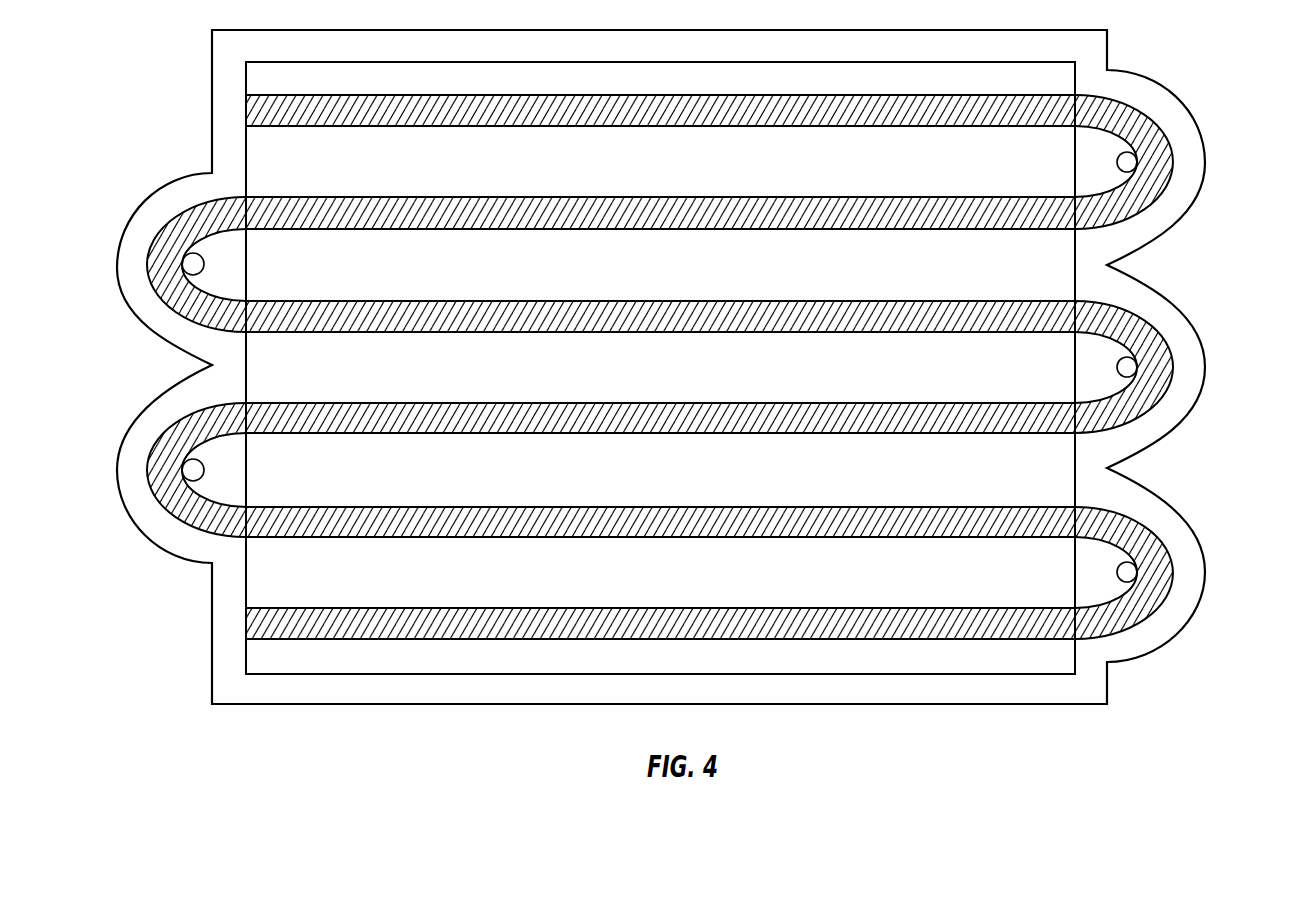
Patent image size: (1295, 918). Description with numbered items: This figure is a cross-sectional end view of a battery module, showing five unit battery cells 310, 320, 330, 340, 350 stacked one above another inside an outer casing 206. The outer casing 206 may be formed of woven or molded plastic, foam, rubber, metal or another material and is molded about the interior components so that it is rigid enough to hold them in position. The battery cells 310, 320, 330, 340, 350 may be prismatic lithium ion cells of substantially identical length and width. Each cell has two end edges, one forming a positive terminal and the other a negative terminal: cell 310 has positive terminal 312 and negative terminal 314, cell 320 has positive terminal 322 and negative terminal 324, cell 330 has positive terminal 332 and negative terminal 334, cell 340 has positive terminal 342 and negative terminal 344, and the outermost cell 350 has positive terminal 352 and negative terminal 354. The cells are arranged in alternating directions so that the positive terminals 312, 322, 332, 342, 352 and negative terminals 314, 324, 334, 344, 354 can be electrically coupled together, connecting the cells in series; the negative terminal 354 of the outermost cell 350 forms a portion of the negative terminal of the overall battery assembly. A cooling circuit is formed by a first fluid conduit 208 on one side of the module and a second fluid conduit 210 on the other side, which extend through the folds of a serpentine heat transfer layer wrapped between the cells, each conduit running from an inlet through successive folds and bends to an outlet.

The outer casing 206 is at (293, 692).
The first fluid conduit 208 is at (1127, 162).
The second fluid conduit 210 is at (190, 262).
The unit battery cell 310 is at (278, 588).
The positive terminal 312 is at (1075, 575).
The negative terminal 314 is at (246, 575).
The unit battery cell 320 is at (452, 483).
The positive terminal 322 is at (245, 477).
The negative terminal 324 is at (1075, 477).
The unit battery cell 330 is at (452, 381).
The positive terminal 332 is at (1075, 375).
The negative terminal 334 is at (245, 340).
The unit battery cell 340 is at (452, 277).
The positive terminal 342 is at (245, 280).
The negative terminal 344 is at (1075, 270).
The unit battery cell 350 is at (452, 175).
The positive terminal 352 is at (1075, 160).
The negative terminal 354 is at (243, 148).